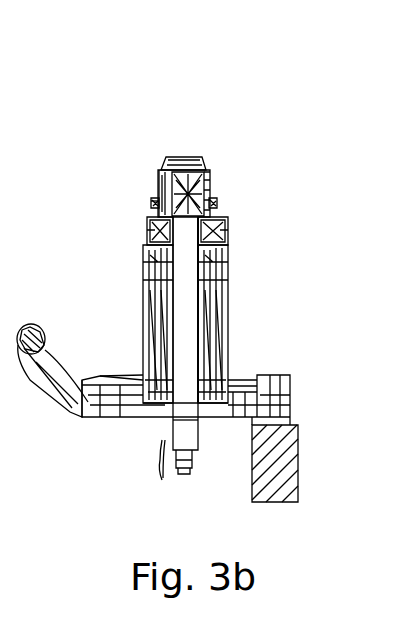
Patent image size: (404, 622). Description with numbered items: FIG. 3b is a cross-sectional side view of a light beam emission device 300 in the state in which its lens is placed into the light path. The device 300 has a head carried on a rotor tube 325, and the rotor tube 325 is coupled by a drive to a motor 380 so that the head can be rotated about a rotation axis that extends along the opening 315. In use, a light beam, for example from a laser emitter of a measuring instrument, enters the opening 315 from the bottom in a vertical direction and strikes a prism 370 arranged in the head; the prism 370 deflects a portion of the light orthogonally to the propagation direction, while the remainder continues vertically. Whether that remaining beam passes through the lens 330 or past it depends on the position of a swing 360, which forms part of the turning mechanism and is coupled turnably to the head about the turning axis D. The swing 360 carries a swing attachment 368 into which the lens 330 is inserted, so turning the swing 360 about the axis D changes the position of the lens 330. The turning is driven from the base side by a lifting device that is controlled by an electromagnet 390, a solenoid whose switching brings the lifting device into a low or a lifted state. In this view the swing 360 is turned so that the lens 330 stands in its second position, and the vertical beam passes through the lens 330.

The light beam emission device 300 is at (238, 80).
The opening 315 is at (199, 308).
The rotor tube 325 is at (226, 236).
The lens 330 is at (182, 158).
The swing 360 is at (213, 190).
The swing attachment 368 is at (206, 161).
The prism 370 is at (159, 166).
The motor 380 is at (301, 462).
The electromagnet 390 is at (160, 442).
The turning axis D is at (151, 201).